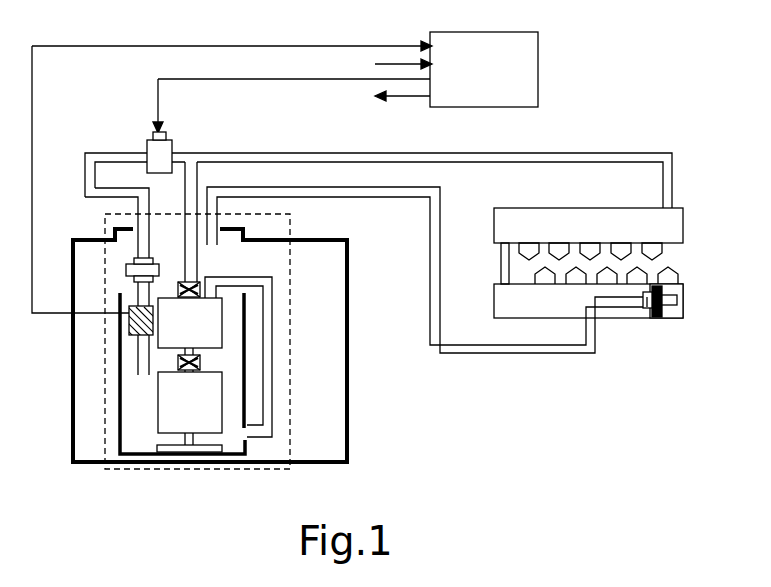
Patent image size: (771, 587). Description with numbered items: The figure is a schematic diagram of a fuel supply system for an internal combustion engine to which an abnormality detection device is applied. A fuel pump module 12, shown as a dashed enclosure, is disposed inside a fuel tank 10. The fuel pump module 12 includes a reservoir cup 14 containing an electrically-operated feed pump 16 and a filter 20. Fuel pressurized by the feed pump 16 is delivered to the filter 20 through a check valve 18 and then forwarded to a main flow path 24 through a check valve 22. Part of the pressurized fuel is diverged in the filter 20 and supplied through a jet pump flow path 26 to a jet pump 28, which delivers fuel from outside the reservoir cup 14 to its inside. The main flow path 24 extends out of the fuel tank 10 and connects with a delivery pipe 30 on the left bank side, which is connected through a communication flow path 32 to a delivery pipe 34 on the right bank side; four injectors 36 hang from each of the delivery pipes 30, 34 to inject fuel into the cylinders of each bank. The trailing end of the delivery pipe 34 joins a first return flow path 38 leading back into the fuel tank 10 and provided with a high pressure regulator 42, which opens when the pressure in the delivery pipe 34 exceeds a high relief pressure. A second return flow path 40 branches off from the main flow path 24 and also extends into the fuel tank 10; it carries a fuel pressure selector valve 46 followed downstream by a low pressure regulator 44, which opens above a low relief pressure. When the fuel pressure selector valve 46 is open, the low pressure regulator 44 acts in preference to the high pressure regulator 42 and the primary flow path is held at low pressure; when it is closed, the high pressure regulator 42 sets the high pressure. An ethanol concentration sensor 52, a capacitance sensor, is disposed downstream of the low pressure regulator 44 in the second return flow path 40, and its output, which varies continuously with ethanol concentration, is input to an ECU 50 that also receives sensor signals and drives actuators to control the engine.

The fuel tank 10 is at (347, 432).
The fuel pump module 12 is at (105, 440).
The reservoir cup 14 is at (118, 400).
The feed pump 16 is at (157, 415).
The check valve 18 is at (178, 362).
The filter 20 is at (222, 335).
The check valve 22 is at (200, 280).
The main flow path 24 is at (198, 176).
The jet pump flow path 26 is at (272, 383).
The jet pump 28 is at (247, 441).
The delivery pipe 30 is at (683, 218).
The communication flow path 32 is at (501, 266).
The delivery pipe 34 is at (683, 305).
The injectors 36 is at (663, 250).
The first return flow path 38 is at (482, 353).
The second return flow path 40 is at (96, 153).
The high pressure regulator 42 is at (657, 318).
The low pressure regulator 44 is at (126, 270).
The fuel pressure selector valve 46 is at (173, 146).
The ECU 50 is at (538, 70).
The ethanol concentration sensor 52 is at (129, 323).